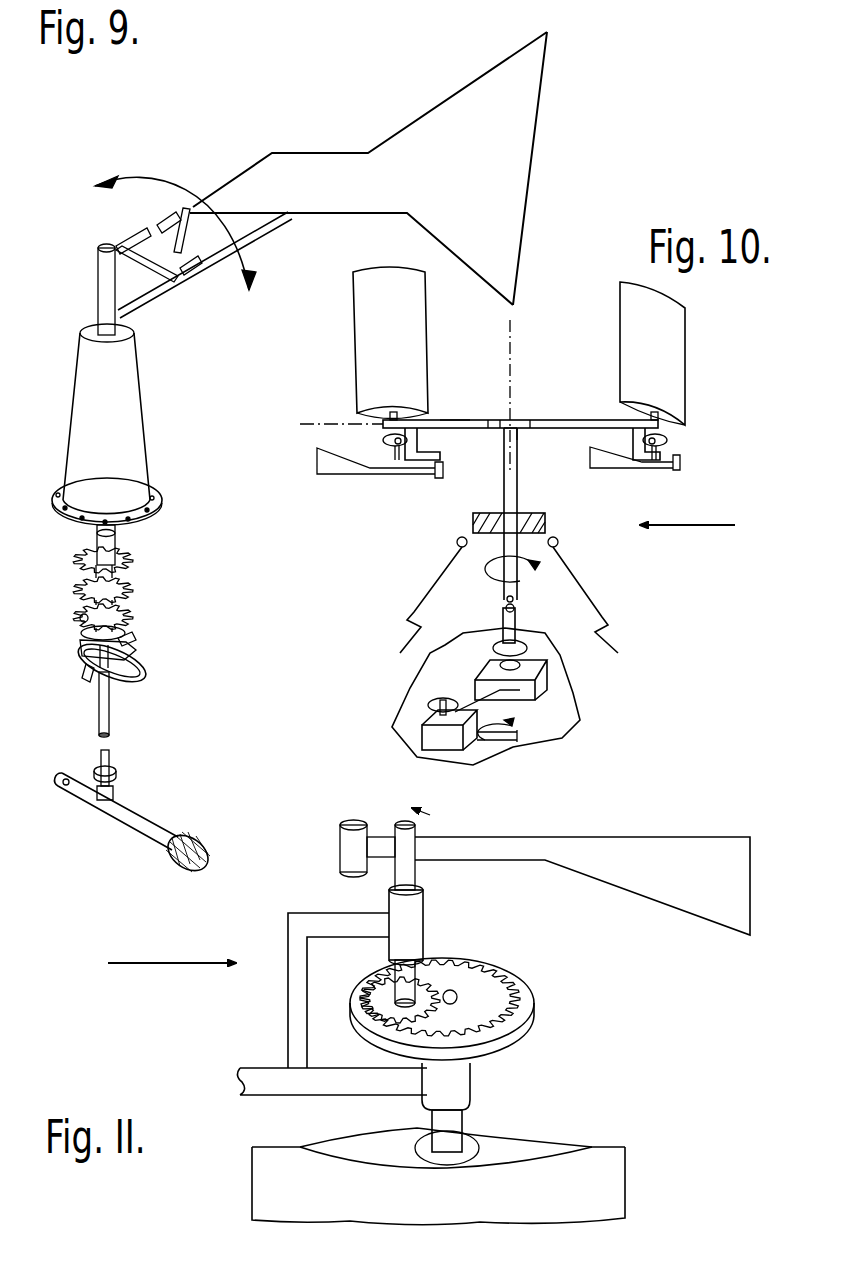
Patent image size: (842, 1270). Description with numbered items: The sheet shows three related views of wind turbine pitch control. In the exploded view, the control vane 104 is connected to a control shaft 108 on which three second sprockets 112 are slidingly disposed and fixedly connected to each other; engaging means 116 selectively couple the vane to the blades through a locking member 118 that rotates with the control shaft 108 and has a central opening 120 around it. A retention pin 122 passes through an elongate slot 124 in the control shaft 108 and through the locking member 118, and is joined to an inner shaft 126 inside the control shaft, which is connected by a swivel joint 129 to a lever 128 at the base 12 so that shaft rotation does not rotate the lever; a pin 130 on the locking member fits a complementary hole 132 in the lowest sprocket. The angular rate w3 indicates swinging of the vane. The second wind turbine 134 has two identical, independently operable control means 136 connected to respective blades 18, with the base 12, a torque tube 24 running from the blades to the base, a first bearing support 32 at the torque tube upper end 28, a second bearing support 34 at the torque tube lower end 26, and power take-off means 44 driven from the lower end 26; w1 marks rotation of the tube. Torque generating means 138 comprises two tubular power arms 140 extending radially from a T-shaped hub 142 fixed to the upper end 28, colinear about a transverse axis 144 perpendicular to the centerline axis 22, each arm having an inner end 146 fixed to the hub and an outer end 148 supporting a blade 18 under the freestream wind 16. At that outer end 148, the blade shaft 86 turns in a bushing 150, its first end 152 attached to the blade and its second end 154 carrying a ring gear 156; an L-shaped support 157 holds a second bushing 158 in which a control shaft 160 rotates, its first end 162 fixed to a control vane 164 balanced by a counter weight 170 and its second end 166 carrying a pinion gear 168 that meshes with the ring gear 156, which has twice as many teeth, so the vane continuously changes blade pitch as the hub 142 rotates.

In FIG. 9, the control vane 104 is at (436, 98).
In FIG. 9, the control shaft 108 is at (118, 537).
In FIG. 9, the second sprocket 112 is at (131, 590).
In FIG. 9, the engaging means 116 is at (163, 655).
In FIG. 9, the locking member 118 is at (143, 686).
In FIG. 9, the central opening 120 is at (133, 648).
In FIG. 9, the retention pin 122 is at (134, 635).
In FIG. 9, the elongate slot 124 is at (83, 654).
In FIG. 9, the inner shaft 126 is at (96, 701).
In FIG. 9, the lever 128 is at (194, 837).
In FIG. 9, the swivel joint 129 is at (113, 772).
In FIG. 9, the pin 130 is at (82, 634).
In FIG. 9, the complementary hole 132 is at (80, 619).
In FIG. 10, the blade 18 is at (352, 325).
In FIG. 11, the blade 18 is at (632, 1190).
In FIG. 10, the centerline axis 22 is at (508, 330).
In FIG. 10, the torque tube 24 is at (502, 491).
In FIG. 10, the torque tube lower end 26 is at (518, 638).
In FIG. 10, the torque tube upper end 28 is at (488, 554).
In FIG. 10, the first bearing support 32 is at (476, 511).
In FIG. 10, the second bearing support 34 is at (535, 690).
In FIG. 10, the power take-off means 44 is at (468, 654).
In FIG. 10, the base 12 is at (535, 678).
In FIG. 10, the freestream wind 16 is at (735, 525).
In FIG. 11, the freestream wind 16 is at (108, 967).
In FIG. 10, the second wind turbine 134 is at (539, 398).
In FIG. 10, the control means 136 is at (667, 442).
In FIG. 11, the control means 136 is at (568, 1004).
In FIG. 10, the torque generating means 138 is at (452, 416).
In FIG. 10, the power arm 140 is at (482, 428).
In FIG. 11, the power arm 140 is at (288, 1052).
In FIG. 10, the T-shaped hub 142 is at (513, 419).
In FIG. 10, the transverse axis 144 is at (320, 421).
In FIG. 10, the inner end 146 is at (523, 435).
In FIG. 10, the control vane 164 is at (608, 462).
In FIG. 11, the control vane 164 is at (660, 836).
In FIG. 11, the counter weight 170 is at (350, 818).
In FIG. 11, the control shaft 160 is at (432, 812).
In FIG. 11, the first end 162 is at (417, 828).
In FIG. 11, the second bushing 158 is at (387, 899).
In FIG. 11, the L-shaped support 157 is at (285, 988).
In FIG. 11, the ring gear 156 is at (497, 968).
In FIG. 11, the second end 154 is at (450, 986).
In FIG. 11, the second end 166 is at (362, 990).
In FIG. 11, the pinion gear 168 is at (450, 998).
In FIG. 11, the bushing 150 is at (473, 1081).
In FIG. 11, the blade shaft 86 is at (465, 1124).
In FIG. 11, the first end 152 is at (410, 1152).
In FIG. 11, the outer end 148 is at (365, 1095).
In FIG. 9, the angular velocity omega 3 w3 is at (166, 180).
In FIG. 10, the angular velocity omega 1 w1 is at (549, 575).